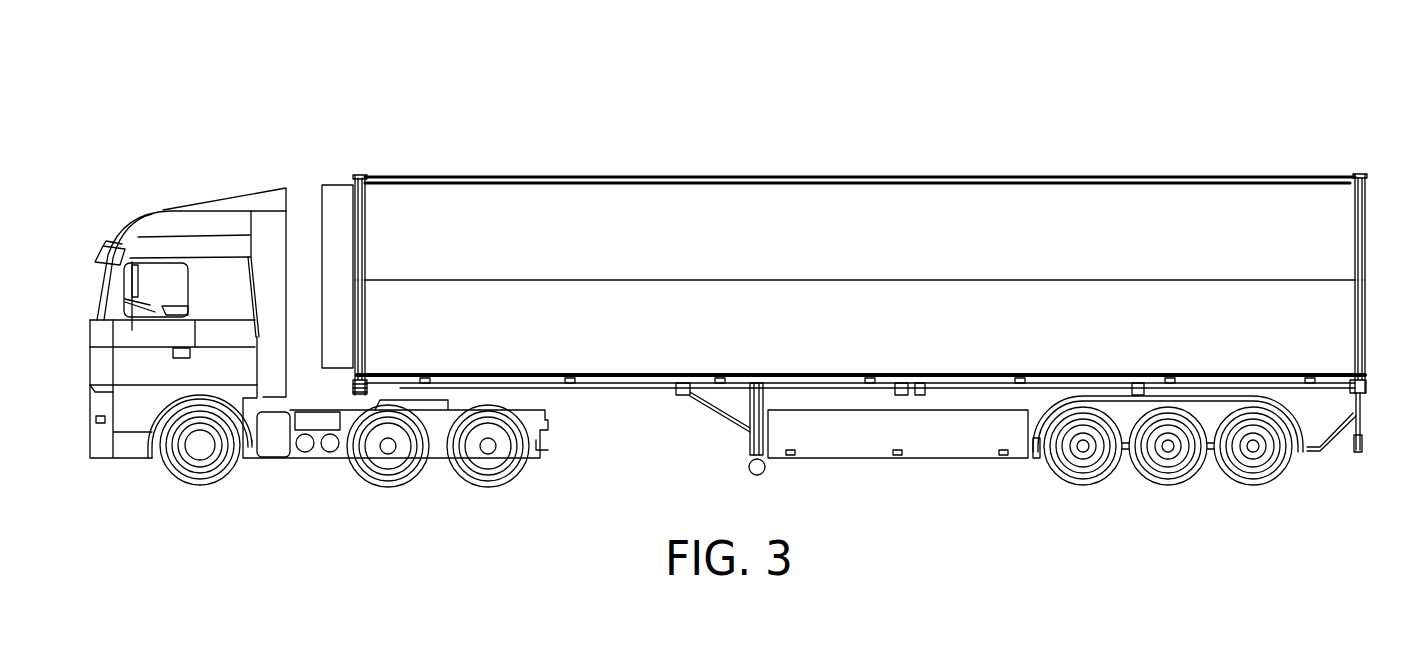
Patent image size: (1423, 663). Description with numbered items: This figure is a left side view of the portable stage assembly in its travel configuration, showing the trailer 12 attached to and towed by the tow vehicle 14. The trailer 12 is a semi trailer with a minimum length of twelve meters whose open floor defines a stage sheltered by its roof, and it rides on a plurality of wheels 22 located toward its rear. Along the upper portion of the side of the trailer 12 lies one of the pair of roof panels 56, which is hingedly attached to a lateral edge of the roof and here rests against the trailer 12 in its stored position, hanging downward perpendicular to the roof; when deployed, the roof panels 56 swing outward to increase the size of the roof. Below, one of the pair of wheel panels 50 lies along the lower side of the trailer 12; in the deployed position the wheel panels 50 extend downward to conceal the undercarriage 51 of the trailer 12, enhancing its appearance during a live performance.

The tow vehicle 14 is at (245, 195).
The trailer 12 is at (866, 310).
The roof panels 56 is at (1200, 233).
The wheel panels 50 is at (1325, 323).
The undercarriage 51 is at (864, 478).
The wheels 22 is at (1253, 483).